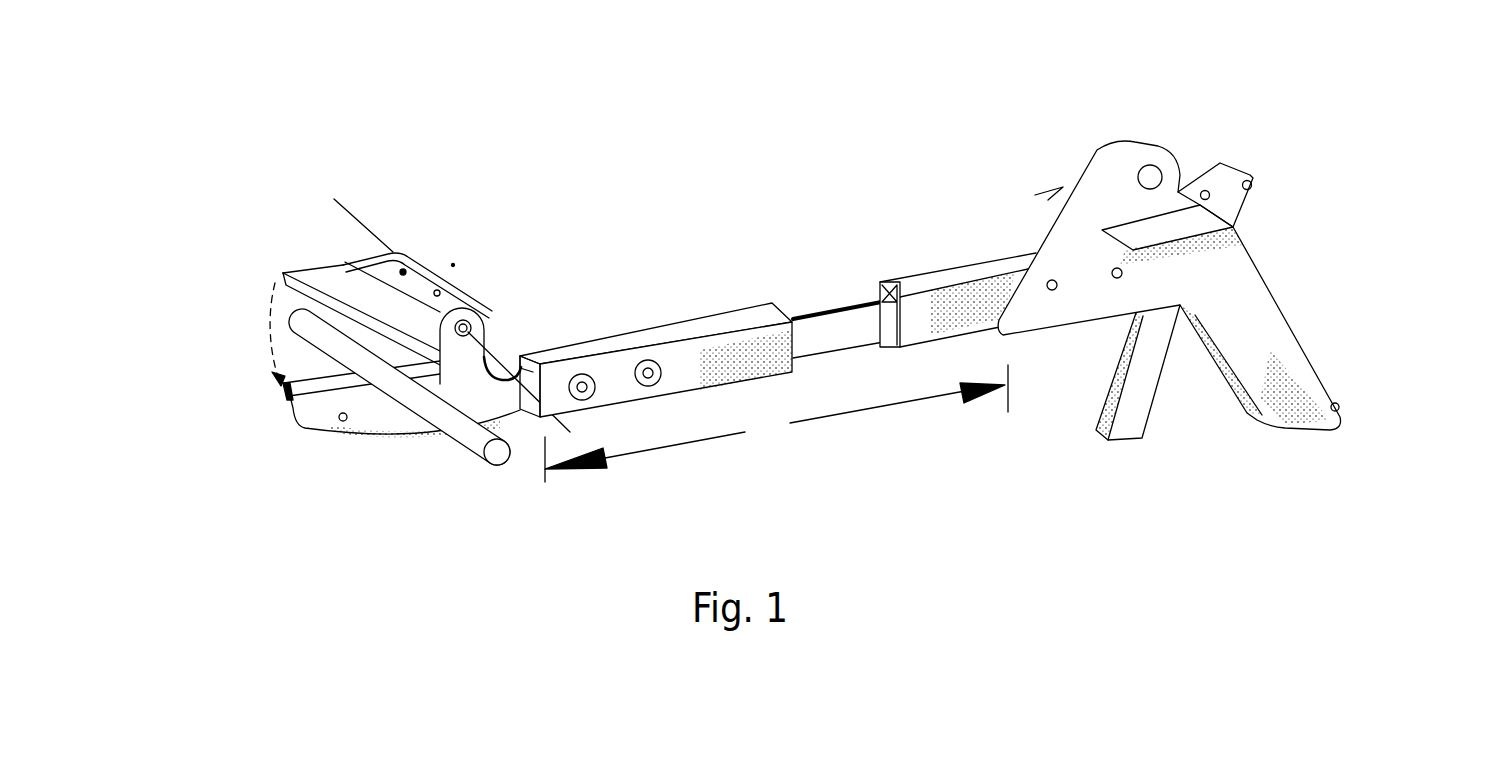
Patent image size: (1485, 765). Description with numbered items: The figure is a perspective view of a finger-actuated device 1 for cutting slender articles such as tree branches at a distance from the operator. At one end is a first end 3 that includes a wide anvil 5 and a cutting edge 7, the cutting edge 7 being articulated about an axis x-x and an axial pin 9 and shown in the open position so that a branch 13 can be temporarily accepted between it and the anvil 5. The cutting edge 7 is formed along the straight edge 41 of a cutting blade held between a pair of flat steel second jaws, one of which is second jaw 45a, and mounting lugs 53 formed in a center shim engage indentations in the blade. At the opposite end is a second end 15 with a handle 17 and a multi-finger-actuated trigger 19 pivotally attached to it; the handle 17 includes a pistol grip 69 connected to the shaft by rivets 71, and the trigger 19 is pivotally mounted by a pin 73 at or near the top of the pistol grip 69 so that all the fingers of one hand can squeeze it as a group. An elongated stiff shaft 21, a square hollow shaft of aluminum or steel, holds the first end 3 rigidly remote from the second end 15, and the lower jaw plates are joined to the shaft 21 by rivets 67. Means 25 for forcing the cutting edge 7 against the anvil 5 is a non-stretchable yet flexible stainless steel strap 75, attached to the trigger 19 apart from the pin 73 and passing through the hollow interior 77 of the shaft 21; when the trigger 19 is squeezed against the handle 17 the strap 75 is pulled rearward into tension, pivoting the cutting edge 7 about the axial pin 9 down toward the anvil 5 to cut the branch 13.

The finger-actuated device 1 is at (794, 316).
The first end 3 is at (373, 363).
The wide anvil 5 is at (337, 393).
The cutting edge 7 is at (350, 303).
The axial pin 9 is at (486, 305).
The branch 13 is at (437, 410).
The second end 15 is at (1158, 247).
The handle 17 is at (1250, 290).
The multi-finger-actuated trigger 19 is at (1148, 373).
The elongated stiff shaft 21 is at (656, 305).
The means to force cutting edge against anvil 25 is at (813, 252).
The straight edge 41 is at (350, 275).
The second jaw 45a is at (432, 285).
The mounting lugs 53 is at (404, 268).
The rivets 67 is at (582, 385).
The pistol grip 69 is at (1263, 343).
The rivets 71 is at (1115, 270).
The pin 73 is at (1150, 170).
The flexible stainless steel strap 75 is at (852, 332).
The hollow interior 77 is at (896, 292).